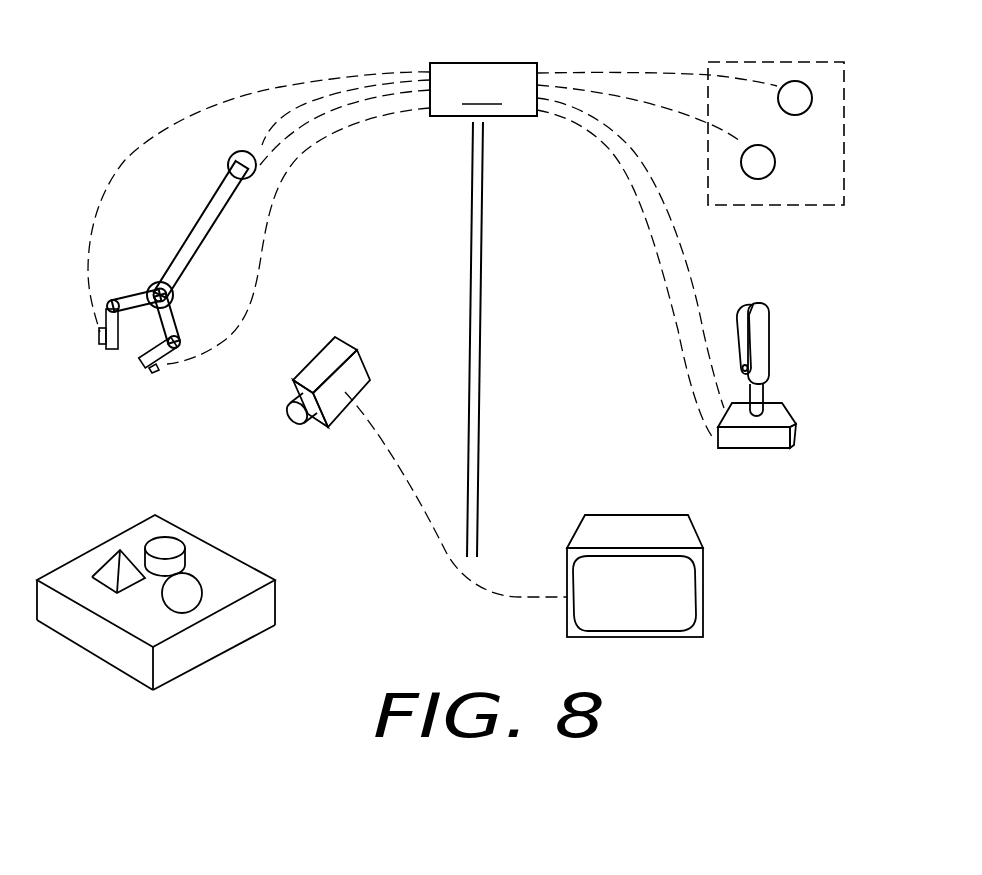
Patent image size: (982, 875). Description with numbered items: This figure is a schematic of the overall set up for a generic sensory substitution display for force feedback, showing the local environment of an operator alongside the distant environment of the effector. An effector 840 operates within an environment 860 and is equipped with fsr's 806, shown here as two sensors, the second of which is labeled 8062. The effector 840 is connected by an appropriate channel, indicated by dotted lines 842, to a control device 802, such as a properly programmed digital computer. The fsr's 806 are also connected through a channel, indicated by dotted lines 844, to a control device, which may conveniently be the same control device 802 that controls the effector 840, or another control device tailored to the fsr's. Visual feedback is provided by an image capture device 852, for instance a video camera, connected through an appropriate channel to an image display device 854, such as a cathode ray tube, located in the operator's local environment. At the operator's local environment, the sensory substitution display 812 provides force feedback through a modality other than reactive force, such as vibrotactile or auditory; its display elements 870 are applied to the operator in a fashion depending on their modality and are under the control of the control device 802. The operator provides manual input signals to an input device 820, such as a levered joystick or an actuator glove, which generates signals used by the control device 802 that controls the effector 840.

The control device 802 is at (483, 310).
The dotted lines 844 is at (208, 113).
The dotted lines 842 is at (238, 142).
The effector 840 is at (134, 262).
The fsr's 806 is at (100, 347).
The finger sensor 2 8062 is at (154, 373).
The sensory substitution display 812 is at (803, 212).
The display elements 870 is at (795, 110).
The input device 820 is at (782, 367).
The image capture device 852 is at (356, 384).
The image display device 854 is at (700, 586).
The environment 860 is at (252, 558).